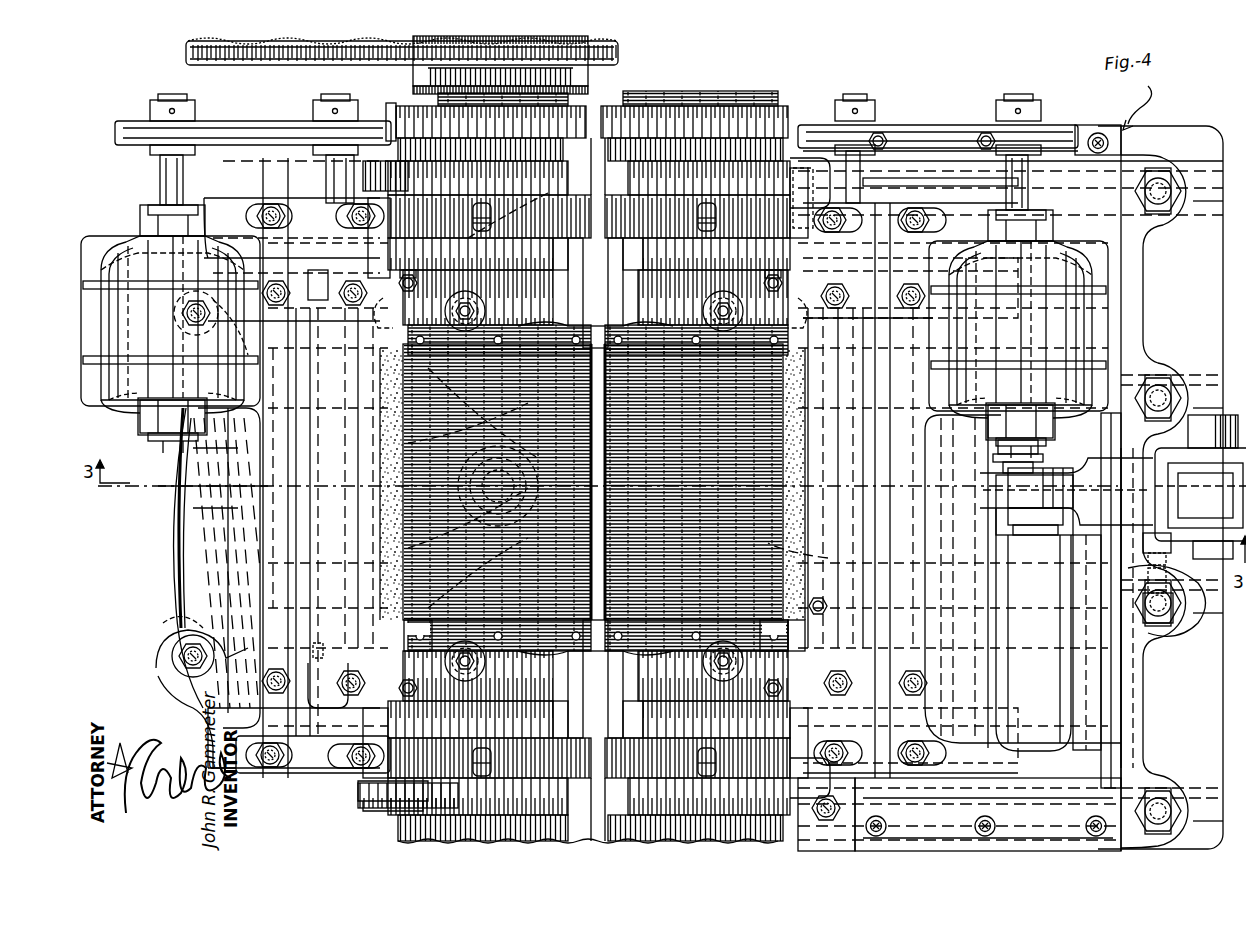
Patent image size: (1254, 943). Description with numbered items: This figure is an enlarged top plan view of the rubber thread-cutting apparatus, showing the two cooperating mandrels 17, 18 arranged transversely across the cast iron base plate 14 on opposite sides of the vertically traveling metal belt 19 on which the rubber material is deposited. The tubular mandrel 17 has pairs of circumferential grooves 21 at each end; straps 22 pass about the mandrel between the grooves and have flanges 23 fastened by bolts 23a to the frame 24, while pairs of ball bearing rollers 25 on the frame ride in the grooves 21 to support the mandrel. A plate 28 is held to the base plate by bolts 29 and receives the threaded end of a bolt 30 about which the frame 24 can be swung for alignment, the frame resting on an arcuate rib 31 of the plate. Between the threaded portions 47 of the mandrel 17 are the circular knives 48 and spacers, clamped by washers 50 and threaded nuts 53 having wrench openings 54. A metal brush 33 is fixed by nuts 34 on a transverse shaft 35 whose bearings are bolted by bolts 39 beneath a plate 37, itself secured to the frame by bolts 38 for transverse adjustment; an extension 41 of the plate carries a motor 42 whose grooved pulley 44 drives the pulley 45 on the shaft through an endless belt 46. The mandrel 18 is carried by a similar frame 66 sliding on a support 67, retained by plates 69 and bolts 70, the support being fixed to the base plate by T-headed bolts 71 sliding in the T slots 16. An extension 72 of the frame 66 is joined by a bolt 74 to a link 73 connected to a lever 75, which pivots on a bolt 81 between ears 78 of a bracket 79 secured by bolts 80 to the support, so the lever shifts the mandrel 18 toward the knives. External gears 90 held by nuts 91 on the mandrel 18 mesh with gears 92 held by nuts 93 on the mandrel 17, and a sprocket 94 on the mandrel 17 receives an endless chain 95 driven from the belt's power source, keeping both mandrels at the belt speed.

The base plate 14 is at (1212, 718).
The T slots 16 is at (1210, 175).
The mandrel 17 is at (414, 647).
The mandrel 18 is at (756, 642).
The metal belt 19 is at (573, 637).
The circumferential grooves 21 is at (546, 179).
The straps 22 is at (592, 205).
The flanges 23 is at (460, 196).
The bolts 23a is at (480, 199).
The frame 24 is at (180, 505).
The ball bearing rollers 25 is at (382, 226).
The plate 28 is at (157, 583).
The bolts 29 is at (177, 638).
The bolt 30 is at (372, 436).
The arcuate rib 31 is at (162, 450).
The metal brush 33 is at (400, 317).
The nuts 34 is at (397, 282).
The shaft 35 is at (390, 305).
The plate 37 is at (250, 530).
The bolts 38 is at (255, 202).
The bolts 39 is at (332, 277).
The extension 41 is at (84, 228).
The motor 42 is at (114, 392).
The grooved pulley 44 is at (138, 112).
The grooved pulley 45 is at (287, 114).
The endless belt 46 is at (234, 118).
The screw-threaded portions 47 is at (750, 282).
The circular knives 48 is at (501, 315).
The washers 50 is at (775, 624).
The screw-threaded nuts 53 is at (633, 313).
The openings 54 is at (562, 318).
The frame 66 is at (988, 655).
The support 67 is at (1118, 688).
The plates 69 is at (1112, 140).
The bolts 70 is at (1090, 125).
The bolts 71 is at (1160, 382).
The extension 72 is at (1063, 480).
The link 73 is at (1100, 515).
The bolt 74 is at (1050, 526).
The lever 75 is at (1218, 435).
The ears 78 is at (1152, 527).
The bracket 79 is at (1090, 558).
The bolts 80 is at (1165, 615).
The bolt 81 is at (1220, 565).
The external gears 90 is at (792, 112).
The nuts 91 is at (760, 90).
The external gears 92 is at (382, 98).
The nuts 93 is at (407, 95).
The sprocket 94 is at (560, 75).
The endless chain 95 is at (270, 58).